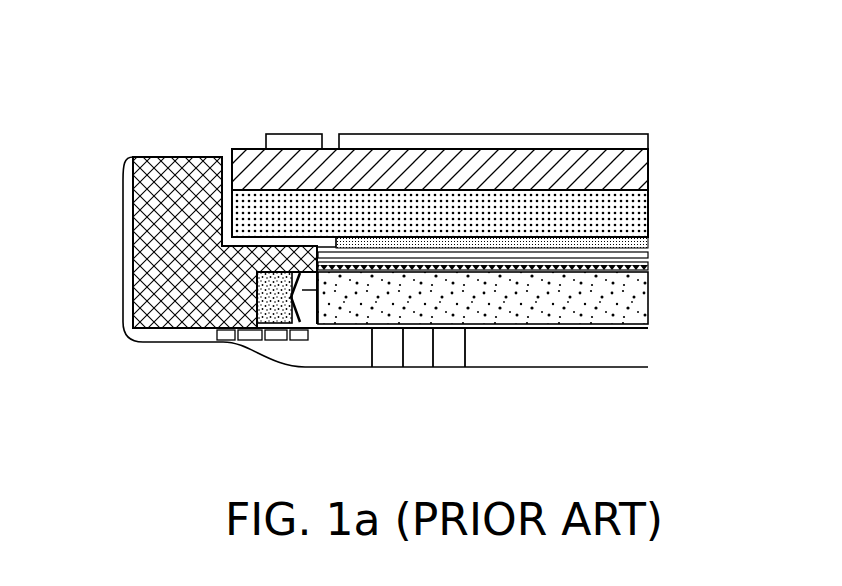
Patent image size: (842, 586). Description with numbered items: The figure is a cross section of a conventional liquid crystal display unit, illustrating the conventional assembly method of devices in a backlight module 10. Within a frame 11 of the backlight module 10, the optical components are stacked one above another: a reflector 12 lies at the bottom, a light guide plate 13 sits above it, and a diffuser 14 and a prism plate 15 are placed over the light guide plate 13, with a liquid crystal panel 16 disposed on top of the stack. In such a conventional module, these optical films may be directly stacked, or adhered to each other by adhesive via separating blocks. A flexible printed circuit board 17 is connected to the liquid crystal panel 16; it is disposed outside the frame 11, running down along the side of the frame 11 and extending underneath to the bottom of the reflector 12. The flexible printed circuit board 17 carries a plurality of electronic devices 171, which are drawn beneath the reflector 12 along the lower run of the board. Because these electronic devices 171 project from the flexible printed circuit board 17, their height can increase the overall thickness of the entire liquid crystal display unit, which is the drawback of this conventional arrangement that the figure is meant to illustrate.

The backlight module 10 is at (75, 25).
The frame 11 is at (143, 242).
The reflector 12 is at (650, 329).
The light guide plate 13 is at (635, 300).
The diffuser 14 is at (650, 262).
The prism plate 15 is at (652, 249).
The liquid crystal panel 16 is at (650, 134).
The flexible printed circuit board 17 is at (126, 159).
The electronic devices 171 is at (387, 353).